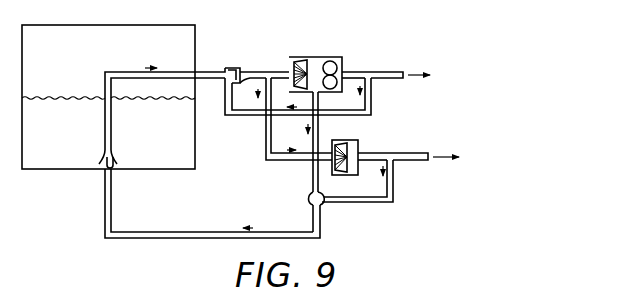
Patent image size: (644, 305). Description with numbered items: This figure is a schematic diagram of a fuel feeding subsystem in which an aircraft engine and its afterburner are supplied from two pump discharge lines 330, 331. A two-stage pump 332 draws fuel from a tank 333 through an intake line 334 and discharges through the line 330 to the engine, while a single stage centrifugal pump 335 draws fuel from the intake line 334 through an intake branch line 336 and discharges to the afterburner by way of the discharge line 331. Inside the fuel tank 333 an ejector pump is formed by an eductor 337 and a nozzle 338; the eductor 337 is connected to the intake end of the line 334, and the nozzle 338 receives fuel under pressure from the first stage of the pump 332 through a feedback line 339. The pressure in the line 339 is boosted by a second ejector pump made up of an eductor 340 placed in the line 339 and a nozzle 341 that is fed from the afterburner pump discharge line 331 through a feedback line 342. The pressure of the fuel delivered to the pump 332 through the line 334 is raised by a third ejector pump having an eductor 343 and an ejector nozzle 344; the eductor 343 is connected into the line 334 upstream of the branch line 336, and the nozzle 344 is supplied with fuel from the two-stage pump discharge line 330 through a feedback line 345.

The pump discharge line 330 is at (378, 70).
The pump discharge line 331 is at (407, 152).
The two-stage pump 332 is at (315, 52).
The tank 333 is at (182, 151).
The intake line 334 is at (206, 72).
The single stage centrifugal pump 335 is at (354, 142).
The intake branch line 336 is at (293, 163).
The eductor 337 is at (113, 153).
The nozzle 338 is at (110, 163).
The feedback line 339 is at (320, 239).
The eductor 340 is at (323, 208).
The nozzle 341 is at (311, 209).
The feedback line 342 is at (395, 186).
The eductor 343 is at (241, 73).
The ejector nozzle 344 is at (239, 69).
The feedback line 345 is at (372, 97).